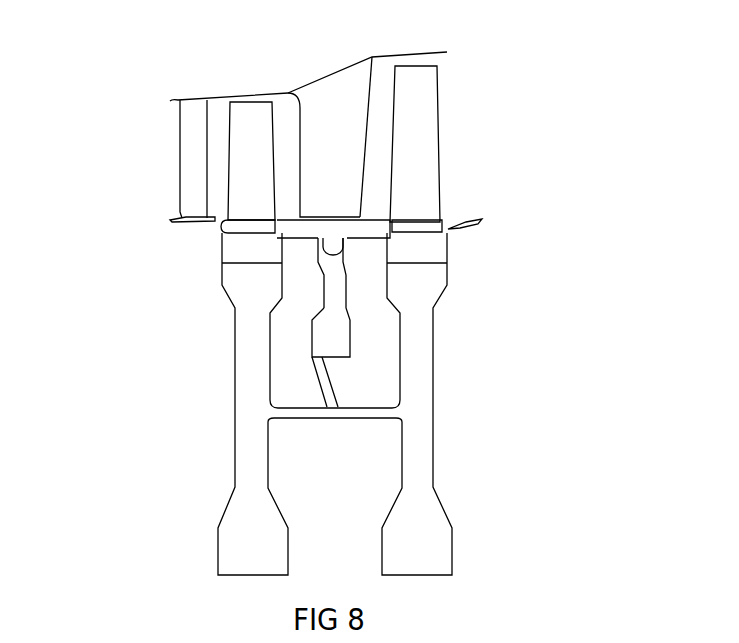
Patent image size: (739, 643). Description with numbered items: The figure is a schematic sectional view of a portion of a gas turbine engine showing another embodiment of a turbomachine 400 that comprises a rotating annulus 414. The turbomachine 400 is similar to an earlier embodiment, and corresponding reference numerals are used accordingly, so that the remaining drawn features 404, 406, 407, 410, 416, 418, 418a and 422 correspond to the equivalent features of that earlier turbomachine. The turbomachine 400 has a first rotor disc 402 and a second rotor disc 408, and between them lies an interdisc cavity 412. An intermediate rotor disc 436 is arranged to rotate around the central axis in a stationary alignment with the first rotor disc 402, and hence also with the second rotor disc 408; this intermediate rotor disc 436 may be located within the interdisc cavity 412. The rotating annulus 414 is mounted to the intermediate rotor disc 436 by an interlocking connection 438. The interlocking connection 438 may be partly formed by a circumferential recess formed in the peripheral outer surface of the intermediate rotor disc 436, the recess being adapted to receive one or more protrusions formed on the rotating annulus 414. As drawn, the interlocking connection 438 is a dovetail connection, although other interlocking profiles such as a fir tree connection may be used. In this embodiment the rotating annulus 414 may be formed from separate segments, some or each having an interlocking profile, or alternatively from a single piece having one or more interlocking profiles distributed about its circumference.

The turbomachine 400 is at (90, 70).
The first rotor disc 402 is at (237, 417).
The first blade 404 is at (252, 100).
The inner wall / spacer 406 is at (286, 112).
The outer flowpath surface 407 is at (408, 52).
The second rotor disc 408 is at (433, 350).
The second blade 410 is at (440, 93).
The interdisc cavity 412 is at (393, 337).
The rotating annulus 414 is at (367, 250).
The platform 416 is at (373, 218).
The upstream seal / vane 418 is at (180, 160).
The seal platform 418a is at (192, 224).
The downstream seal wing 422 is at (471, 228).
The intermediate rotor disc 436 is at (332, 360).
The interlocking connection 438 is at (308, 259).